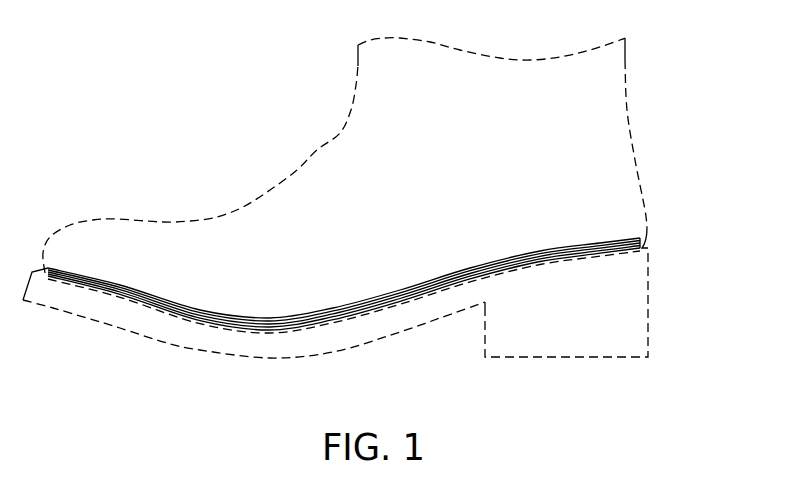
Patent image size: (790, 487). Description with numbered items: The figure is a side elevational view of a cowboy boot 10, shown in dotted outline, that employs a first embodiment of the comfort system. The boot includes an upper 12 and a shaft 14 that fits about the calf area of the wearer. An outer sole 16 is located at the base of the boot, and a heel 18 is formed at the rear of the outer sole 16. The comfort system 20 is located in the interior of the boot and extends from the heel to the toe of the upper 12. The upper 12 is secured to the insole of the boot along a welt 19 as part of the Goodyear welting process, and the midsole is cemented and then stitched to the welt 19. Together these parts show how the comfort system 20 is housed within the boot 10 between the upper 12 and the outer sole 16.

The cowboy boot 10 is at (260, 119).
The upper 12 is at (225, 285).
The shaft 14 is at (610, 63).
The outer sole 16 is at (402, 320).
The heel 18 is at (636, 333).
The welt 19 is at (292, 322).
The comfort system 20 is at (666, 238).